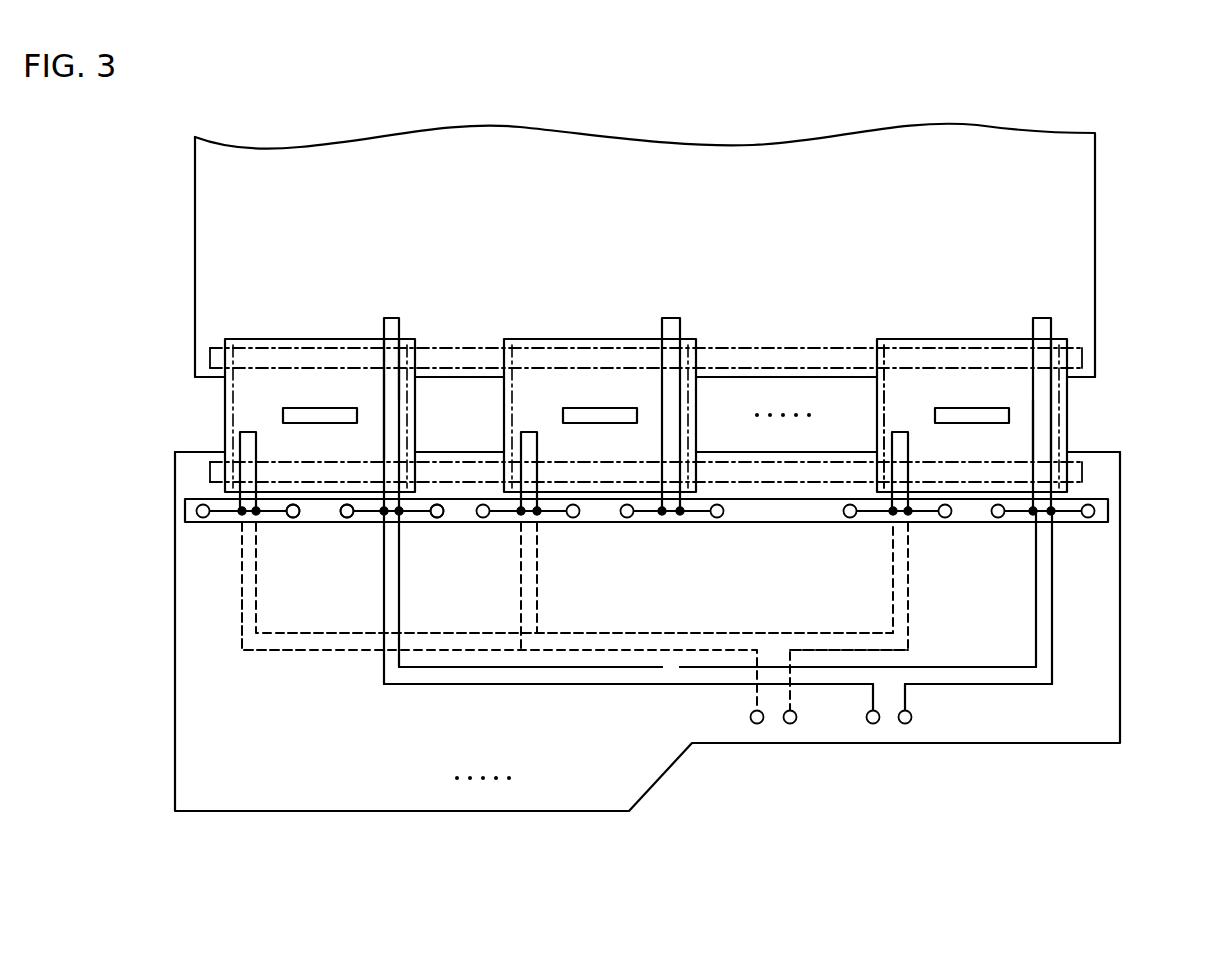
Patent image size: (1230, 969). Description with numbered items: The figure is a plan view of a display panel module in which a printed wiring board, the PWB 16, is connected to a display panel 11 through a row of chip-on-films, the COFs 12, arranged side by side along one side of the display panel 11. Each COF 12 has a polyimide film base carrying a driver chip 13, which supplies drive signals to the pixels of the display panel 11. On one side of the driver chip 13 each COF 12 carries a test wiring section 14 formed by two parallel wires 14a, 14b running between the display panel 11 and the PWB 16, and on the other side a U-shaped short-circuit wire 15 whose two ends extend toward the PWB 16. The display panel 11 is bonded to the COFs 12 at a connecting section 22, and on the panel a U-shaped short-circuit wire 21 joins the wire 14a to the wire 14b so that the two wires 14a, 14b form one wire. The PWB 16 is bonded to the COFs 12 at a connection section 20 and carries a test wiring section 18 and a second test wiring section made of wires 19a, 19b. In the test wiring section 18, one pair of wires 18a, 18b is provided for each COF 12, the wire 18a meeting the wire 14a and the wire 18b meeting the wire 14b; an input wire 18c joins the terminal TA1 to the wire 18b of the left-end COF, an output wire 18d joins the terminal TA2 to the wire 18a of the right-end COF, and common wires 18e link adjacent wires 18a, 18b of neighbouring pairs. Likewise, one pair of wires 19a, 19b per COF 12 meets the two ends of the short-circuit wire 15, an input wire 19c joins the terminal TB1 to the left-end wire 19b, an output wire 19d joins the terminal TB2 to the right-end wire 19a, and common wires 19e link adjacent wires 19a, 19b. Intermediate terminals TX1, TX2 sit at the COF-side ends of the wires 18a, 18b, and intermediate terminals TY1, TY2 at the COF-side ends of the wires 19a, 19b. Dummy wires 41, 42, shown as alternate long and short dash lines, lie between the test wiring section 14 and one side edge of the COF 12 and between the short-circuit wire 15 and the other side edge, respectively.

The display panel 11 is at (1097, 186).
The COF 12 is at (225, 392).
The driver chip 13 is at (283, 416).
The test wiring section 14 is at (461, 383).
The wire 14a is at (396, 395).
The wire 14b is at (385, 430).
The short-circuit wire 15 is at (240, 447).
The PWB 16 is at (1122, 557).
The test wiring section 18 is at (1025, 685).
The wire 18a is at (401, 600).
The wire 18b is at (384, 617).
The input wire 18c is at (537, 686).
The output wire 18d is at (987, 686).
The common wire 18e is at (578, 669).
The wire 19a is at (255, 600).
The wire 19b is at (256, 635).
The input wire 19c is at (258, 652).
The output wire 19d is at (837, 657).
The common wire 19e is at (288, 637).
The connection section 20 is at (1083, 470).
The short-circuit wire 21 is at (391, 318).
The connecting section 22 is at (1073, 342).
The dummy wire 41 is at (1060, 410).
The dummy wire 42 is at (884, 396).
The intermediate terminal TY1 is at (185, 512).
The intermediate terminal TY2 is at (293, 527).
The intermediate terminal TX1 is at (347, 529).
The intermediate terminal TX2 is at (437, 529).
The terminal TA1 is at (873, 724).
The terminal TA2 is at (905, 724).
The terminal TB1 is at (757, 724).
The terminal TB2 is at (790, 724).